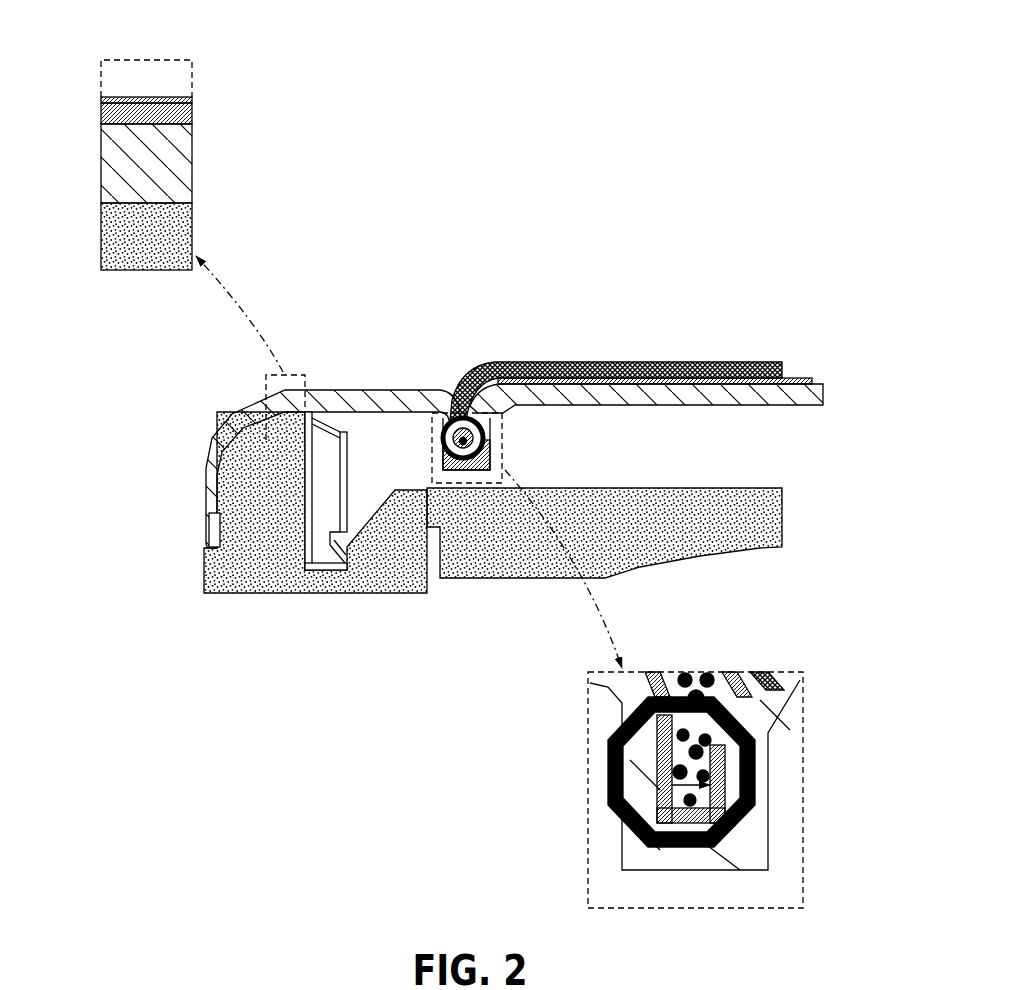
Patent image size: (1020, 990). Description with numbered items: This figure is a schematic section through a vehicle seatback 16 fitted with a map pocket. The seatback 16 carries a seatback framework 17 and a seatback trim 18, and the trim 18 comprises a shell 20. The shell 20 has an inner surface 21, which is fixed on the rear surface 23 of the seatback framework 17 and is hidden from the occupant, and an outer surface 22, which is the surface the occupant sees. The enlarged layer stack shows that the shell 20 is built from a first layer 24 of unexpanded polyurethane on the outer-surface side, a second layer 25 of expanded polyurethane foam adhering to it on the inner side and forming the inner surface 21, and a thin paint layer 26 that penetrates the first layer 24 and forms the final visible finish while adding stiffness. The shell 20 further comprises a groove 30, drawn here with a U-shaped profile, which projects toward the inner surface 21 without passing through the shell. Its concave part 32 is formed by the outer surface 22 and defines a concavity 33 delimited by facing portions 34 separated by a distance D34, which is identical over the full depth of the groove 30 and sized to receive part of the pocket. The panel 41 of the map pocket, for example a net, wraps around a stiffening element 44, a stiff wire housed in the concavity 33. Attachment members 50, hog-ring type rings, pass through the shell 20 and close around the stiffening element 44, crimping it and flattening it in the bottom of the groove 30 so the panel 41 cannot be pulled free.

The seatback 16 is at (816, 460).
The seatback framework 17 is at (338, 490).
The seatback trim 18 is at (160, 240).
The shell 20 is at (681, 357).
The inner surface 21 is at (137, 207).
The outer surface 22 is at (132, 97).
The rear surface 23 is at (372, 390).
The first layer 24 is at (108, 113).
The second layer 25 is at (115, 165).
The paint layer 26 is at (168, 97).
The groove 30 is at (463, 388).
The concave part 32 is at (690, 745).
The concavity 33 is at (703, 745).
The portions 34 is at (703, 742).
The distance D34 is at (697, 773).
The panel 41 is at (677, 363).
The stiffening element 44 is at (470, 437).
The attachment members 50 is at (443, 470).